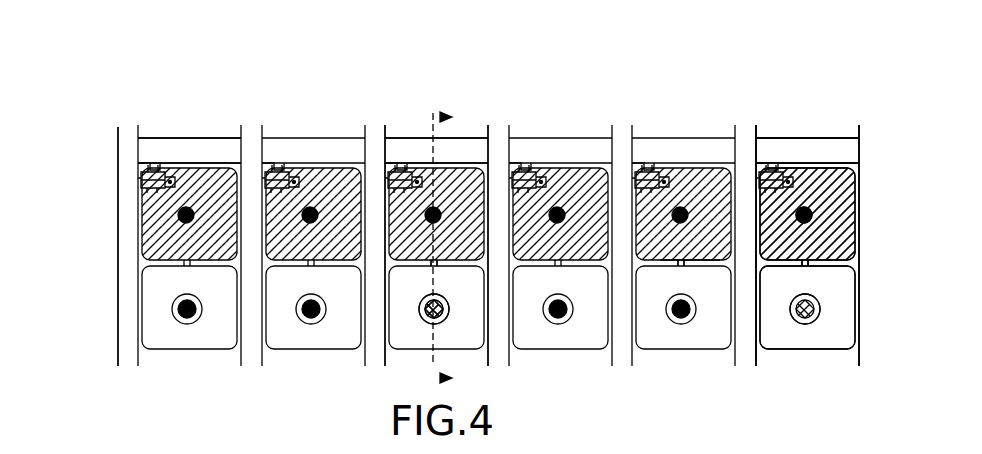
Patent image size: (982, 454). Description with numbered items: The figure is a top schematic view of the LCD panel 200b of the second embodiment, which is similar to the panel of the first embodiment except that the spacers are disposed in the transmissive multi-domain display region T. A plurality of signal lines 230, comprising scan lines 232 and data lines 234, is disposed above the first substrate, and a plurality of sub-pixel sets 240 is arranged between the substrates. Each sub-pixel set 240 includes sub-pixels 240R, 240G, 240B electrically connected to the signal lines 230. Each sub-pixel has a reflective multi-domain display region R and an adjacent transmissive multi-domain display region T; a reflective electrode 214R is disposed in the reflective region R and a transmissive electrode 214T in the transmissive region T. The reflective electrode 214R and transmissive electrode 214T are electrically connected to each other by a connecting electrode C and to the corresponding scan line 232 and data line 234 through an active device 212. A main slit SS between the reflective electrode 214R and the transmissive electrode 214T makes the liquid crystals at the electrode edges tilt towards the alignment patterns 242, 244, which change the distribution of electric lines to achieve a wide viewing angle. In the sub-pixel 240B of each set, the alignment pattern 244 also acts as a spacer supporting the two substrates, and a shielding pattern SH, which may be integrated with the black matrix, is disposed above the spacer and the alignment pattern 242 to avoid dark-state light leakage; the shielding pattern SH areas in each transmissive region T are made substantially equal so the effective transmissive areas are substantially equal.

The signal lines 230 is at (28, 60).
The data line 234 is at (127, 167).
The scan line 232 is at (148, 154).
The active device 212 is at (140, 188).
The sub-pixel set 240 is at (447, 62).
The sub-pixel 240R is at (138, 117).
The sub-pixel 240G is at (262, 117).
The sub-pixel 240B is at (385, 117).
The reflective electrode 214R is at (155, 258).
The transmissive electrode 214T is at (160, 320).
The alignment pattern 242 is at (185, 321).
The shielding pattern SH is at (200, 318).
The alignment pattern 244 is at (448, 310).
The connecting electrode C is at (683, 261).
The main slit SS is at (703, 262).
The reflective multi-domain display region R is at (868, 163).
The transmissive multi-domain display region T is at (868, 264).
The LCD panel 200b is at (870, 421).